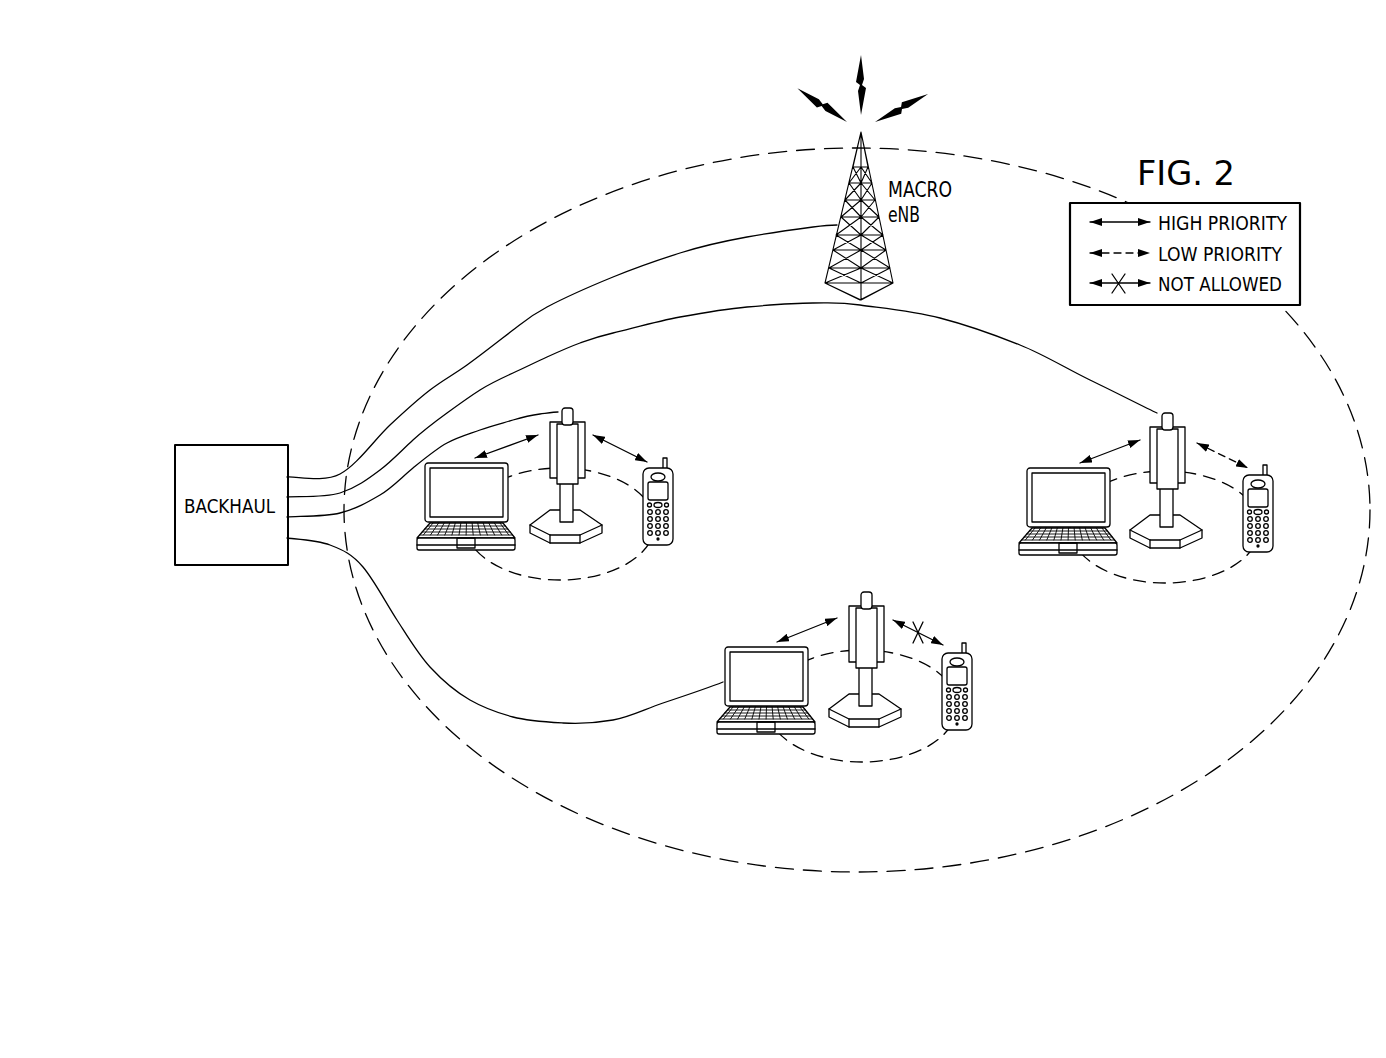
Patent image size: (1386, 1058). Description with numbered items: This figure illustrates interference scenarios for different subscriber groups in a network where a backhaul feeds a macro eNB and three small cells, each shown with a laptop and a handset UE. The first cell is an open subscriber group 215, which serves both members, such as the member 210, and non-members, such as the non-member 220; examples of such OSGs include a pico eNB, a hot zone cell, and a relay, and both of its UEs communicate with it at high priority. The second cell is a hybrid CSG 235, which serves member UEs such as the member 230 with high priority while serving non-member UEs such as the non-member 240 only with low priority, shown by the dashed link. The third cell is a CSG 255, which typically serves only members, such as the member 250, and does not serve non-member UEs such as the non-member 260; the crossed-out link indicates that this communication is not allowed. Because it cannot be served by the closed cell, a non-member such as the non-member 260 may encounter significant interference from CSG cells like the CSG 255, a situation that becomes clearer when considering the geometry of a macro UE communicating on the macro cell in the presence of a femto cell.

The member 210 is at (465, 551).
The open subscriber group 215 is at (565, 588).
The non-member 220 is at (662, 546).
The member 230 is at (1068, 556).
The hybrid CSG 235 is at (1167, 597).
The non-member 240 is at (1263, 553).
The member 250 is at (765, 734).
The CSG 255 is at (865, 776).
The non-member 260 is at (955, 730).